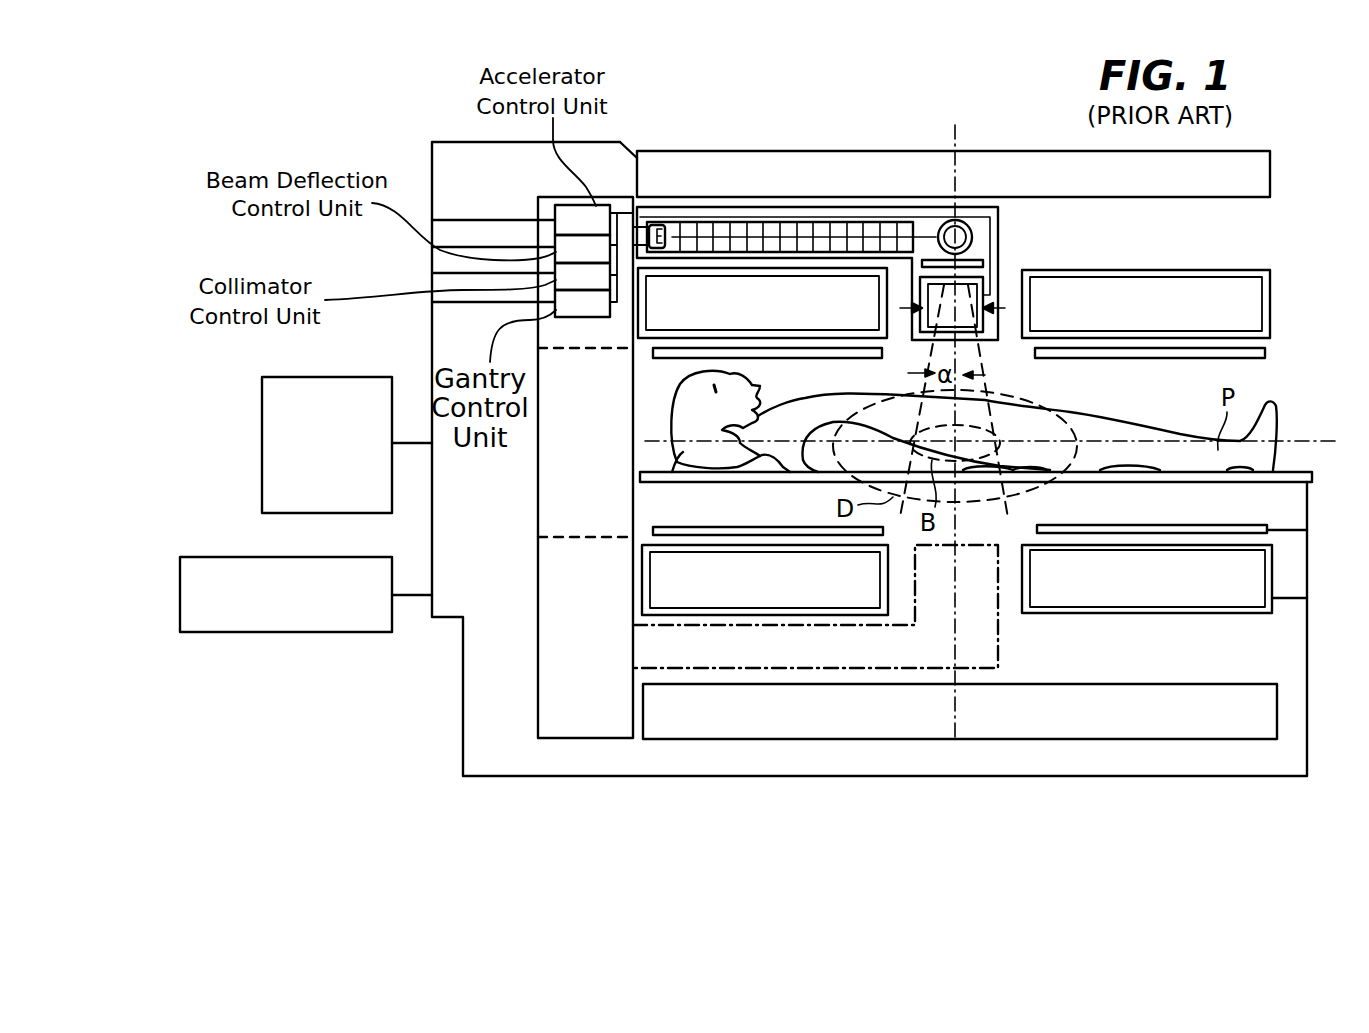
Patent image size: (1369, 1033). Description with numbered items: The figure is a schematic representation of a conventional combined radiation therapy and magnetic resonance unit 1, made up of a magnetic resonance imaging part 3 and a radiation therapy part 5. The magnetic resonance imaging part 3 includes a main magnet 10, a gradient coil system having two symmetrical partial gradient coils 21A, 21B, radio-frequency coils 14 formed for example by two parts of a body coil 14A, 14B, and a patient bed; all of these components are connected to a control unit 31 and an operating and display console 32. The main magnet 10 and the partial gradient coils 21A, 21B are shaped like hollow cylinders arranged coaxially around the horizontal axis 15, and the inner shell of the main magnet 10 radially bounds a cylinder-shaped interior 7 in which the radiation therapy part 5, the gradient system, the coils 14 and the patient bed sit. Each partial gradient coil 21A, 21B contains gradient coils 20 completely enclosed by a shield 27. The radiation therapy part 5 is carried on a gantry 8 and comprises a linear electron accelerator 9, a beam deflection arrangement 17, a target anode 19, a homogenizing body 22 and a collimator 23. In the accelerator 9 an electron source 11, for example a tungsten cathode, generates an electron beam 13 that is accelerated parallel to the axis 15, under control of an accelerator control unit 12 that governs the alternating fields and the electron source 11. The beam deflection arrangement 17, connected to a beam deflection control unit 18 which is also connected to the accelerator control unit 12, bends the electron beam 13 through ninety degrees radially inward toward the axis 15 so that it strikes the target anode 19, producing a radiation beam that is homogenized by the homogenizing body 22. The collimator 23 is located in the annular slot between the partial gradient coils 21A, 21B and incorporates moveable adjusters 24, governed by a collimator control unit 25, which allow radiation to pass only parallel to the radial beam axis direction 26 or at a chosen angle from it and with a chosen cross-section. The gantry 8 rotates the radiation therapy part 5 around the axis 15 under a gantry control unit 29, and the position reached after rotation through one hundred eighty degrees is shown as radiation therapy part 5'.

The combined radiation therapy and magnetic resonance unit 1 is at (500, 822).
The magnetic resonance imaging part 3 is at (1303, 191).
The radiation therapy part 5 is at (841, 273).
The radiation therapy part after rotation 5' is at (842, 606).
The cylinder-shaped interior 7 is at (1279, 381).
The gantry 8 is at (538, 627).
The linear electron accelerator (LINAC) 9 is at (913, 222).
The main magnet 10 is at (1272, 180).
The electron source 11 is at (658, 225).
The accelerator control unit 12 is at (582, 220).
The electron beam 13 is at (741, 221).
The radio-frequency coils 14 is at (704, 364).
The body coil part 14A is at (782, 347).
The body coil part 14B is at (1160, 359).
The horizontal axis 15 is at (1325, 441).
The beam deflection arrangement 17 is at (966, 225).
The beam deflection control unit 18 is at (582, 249).
The target anode 19 is at (983, 266).
The gradient coils 20 is at (1266, 322).
The partial gradient coil 21A is at (842, 341).
The partial gradient coil 21B is at (1147, 252).
The homogenizing body 22 is at (990, 285).
The collimator 23 is at (984, 330).
The moveable adjusters 24 is at (905, 306).
The collimator control unit 25 is at (582, 277).
The radial beam axis direction 26 is at (952, 134).
The shield 27 is at (1272, 292).
The gantry control unit 29 is at (582, 304).
The control unit 31 is at (353, 375).
The operating and display console 32 is at (351, 634).